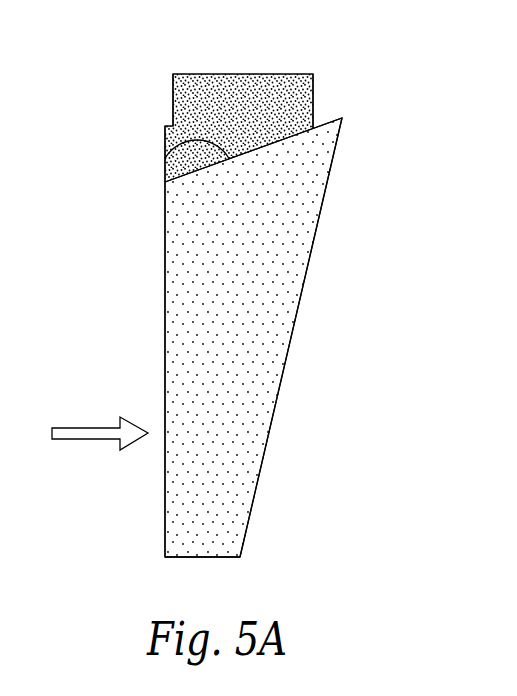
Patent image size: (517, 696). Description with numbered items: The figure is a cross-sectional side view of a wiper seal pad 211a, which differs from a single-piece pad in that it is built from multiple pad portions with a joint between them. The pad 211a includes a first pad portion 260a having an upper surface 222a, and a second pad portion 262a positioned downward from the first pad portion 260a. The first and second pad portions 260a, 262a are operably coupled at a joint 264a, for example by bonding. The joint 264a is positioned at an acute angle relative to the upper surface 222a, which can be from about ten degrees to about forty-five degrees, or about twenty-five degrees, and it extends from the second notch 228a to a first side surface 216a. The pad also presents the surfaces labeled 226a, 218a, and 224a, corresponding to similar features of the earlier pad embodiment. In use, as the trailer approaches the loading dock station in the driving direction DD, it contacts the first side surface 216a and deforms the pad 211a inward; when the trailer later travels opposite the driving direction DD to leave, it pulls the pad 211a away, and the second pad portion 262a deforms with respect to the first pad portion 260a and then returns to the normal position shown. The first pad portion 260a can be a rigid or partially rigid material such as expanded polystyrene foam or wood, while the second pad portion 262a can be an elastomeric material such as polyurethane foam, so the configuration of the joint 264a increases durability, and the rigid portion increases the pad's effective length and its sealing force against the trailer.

The wiper seal pad 211a is at (154, 305).
The first side surface 216a is at (165, 247).
The second angled side surface 218a is at (310, 257).
The upper surface 222a is at (281, 73).
The bottom surface 224a is at (189, 558).
The first top side surface 226a is at (173, 100).
The second notch 228a is at (315, 102).
The first pad portion 260a is at (242, 92).
The second pad portion 262a is at (203, 375).
The joint 264a is at (165, 162).
The driving direction DD is at (83, 435).